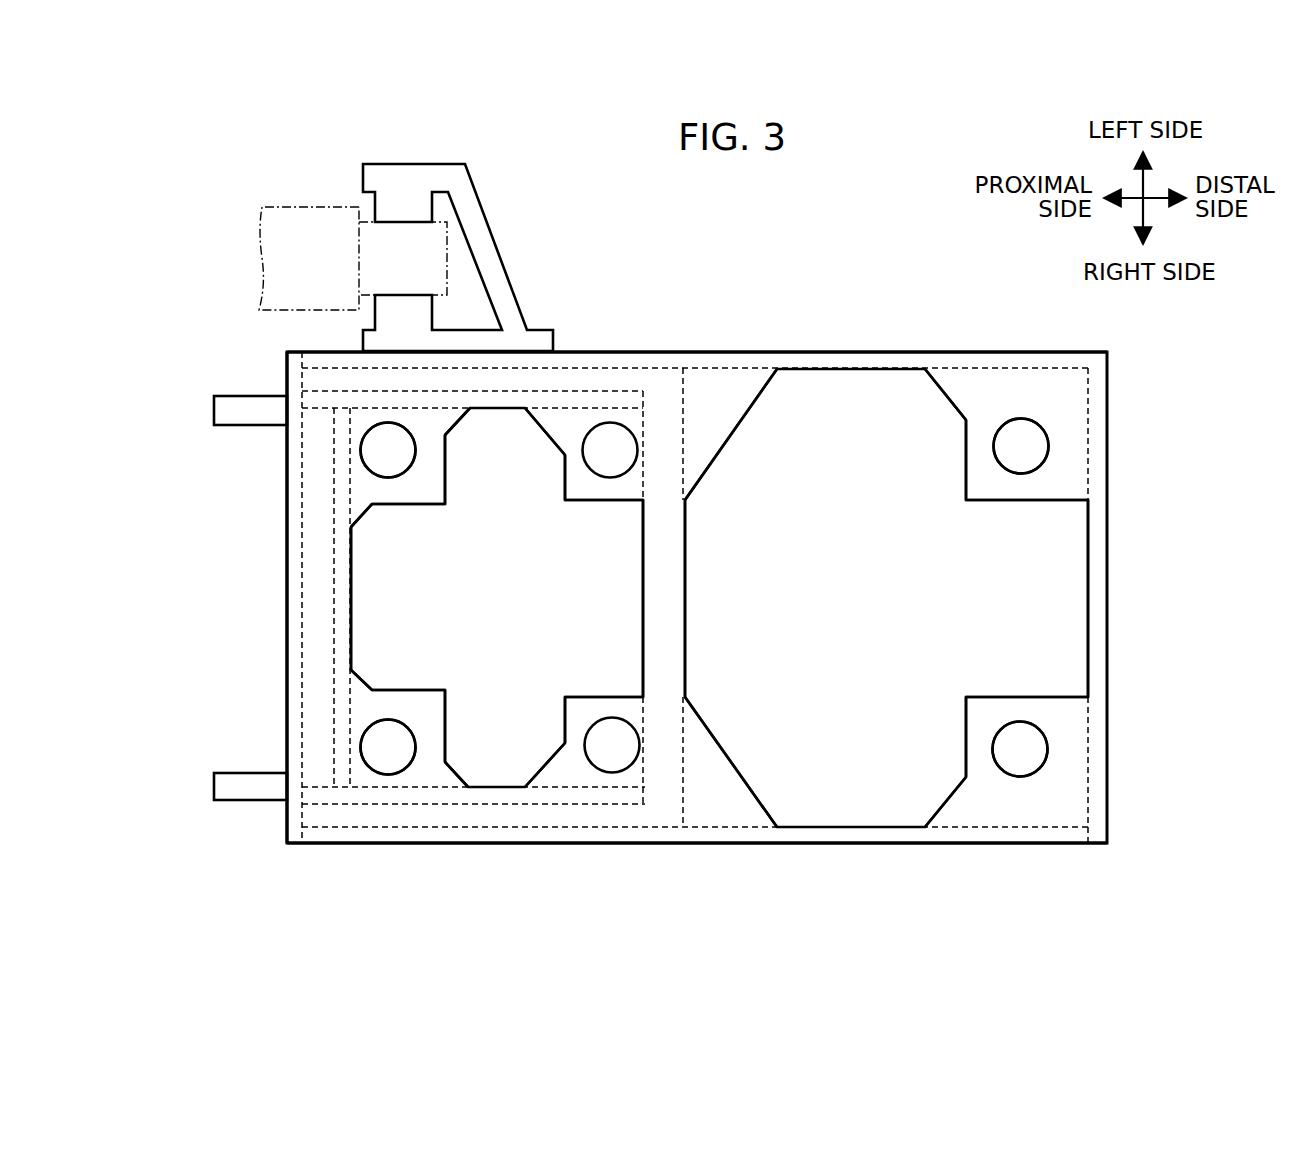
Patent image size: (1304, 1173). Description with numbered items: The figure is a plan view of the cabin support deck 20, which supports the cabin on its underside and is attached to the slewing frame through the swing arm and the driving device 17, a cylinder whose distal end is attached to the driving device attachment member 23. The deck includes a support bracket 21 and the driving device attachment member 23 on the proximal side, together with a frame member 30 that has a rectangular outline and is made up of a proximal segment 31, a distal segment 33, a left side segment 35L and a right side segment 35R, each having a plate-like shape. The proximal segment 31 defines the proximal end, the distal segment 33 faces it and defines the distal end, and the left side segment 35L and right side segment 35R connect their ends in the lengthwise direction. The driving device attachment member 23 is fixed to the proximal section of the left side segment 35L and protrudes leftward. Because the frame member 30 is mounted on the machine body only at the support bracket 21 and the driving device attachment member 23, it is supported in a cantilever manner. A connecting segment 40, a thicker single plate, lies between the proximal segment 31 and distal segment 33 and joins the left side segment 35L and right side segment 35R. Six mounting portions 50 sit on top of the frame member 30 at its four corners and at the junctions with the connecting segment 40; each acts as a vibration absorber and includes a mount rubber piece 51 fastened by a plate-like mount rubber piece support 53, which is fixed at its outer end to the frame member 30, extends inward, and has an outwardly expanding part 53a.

The driving device 17 is at (263, 262).
The cabin support deck 20 is at (208, 214).
The support bracket 21 is at (264, 420).
The driving device attachment member 23 is at (505, 291).
The frame member 30 is at (290, 358).
The proximal segment 31 is at (319, 853).
The distal segment 33 is at (1099, 853).
The left side segment 35L is at (1116, 358).
The right side segment 35R is at (1116, 838).
The connecting segment 40 is at (681, 597).
The mounting portion 50 is at (213, 475).
The mount rubber piece 51 is at (377, 454).
The mount rubber piece support 53 is at (373, 490).
The outwardly expanding part 53a is at (556, 426).